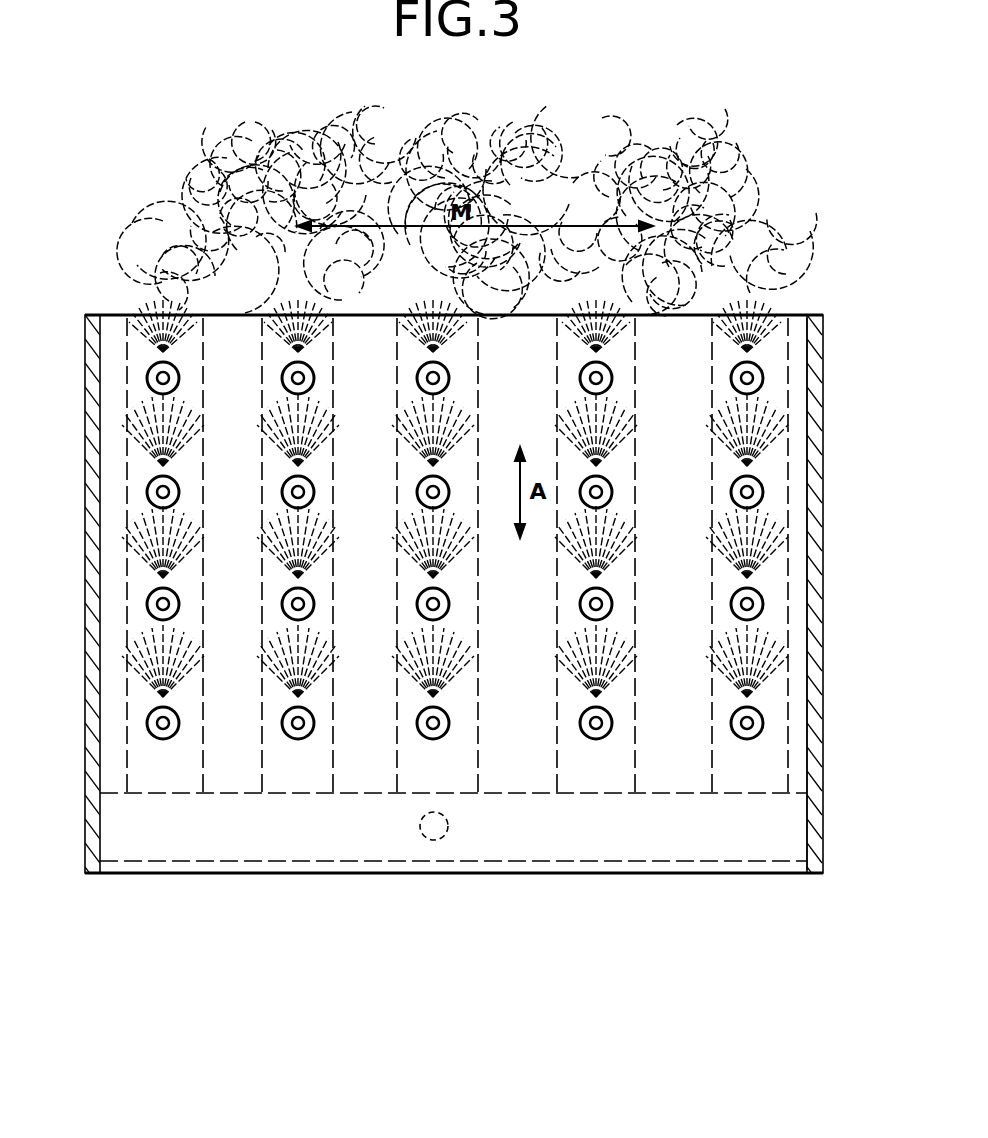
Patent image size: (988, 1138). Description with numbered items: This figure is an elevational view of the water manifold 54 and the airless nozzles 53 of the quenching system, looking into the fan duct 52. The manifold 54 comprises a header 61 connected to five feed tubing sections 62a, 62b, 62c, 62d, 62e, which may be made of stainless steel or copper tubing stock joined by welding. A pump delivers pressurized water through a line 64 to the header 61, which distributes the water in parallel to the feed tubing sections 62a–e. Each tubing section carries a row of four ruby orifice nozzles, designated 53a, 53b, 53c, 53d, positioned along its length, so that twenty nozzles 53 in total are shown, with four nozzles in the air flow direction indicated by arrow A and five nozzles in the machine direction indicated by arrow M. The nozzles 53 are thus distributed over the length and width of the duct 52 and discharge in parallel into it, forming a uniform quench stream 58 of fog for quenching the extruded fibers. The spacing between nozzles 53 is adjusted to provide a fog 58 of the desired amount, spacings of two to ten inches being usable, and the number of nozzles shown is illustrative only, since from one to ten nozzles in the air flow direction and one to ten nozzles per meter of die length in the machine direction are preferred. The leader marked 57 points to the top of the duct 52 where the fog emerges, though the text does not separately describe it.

The fan duct 52 is at (85, 681).
The airless nozzle 53 is at (180, 604).
The airless nozzle (first of row of four) 53a is at (750, 740).
The airless nozzle (second of row of four) 53b is at (763, 604).
The airless nozzle (third of row of four) 53c is at (763, 492).
The airless nozzle (fourth of row of four) 53d is at (763, 378).
The water manifold 54 is at (788, 737).
The casing top opening 57 is at (617, 317).
The quench stream 58 is at (725, 155).
The header 61 is at (603, 845).
The feed tubing section 62a is at (788, 632).
The feed tubing section 62b is at (635, 752).
The feed tubing section 62c is at (478, 752).
The feed tubing section 62d is at (333, 752).
The feed tubing section 62e is at (203, 752).
The line 64 is at (420, 822).